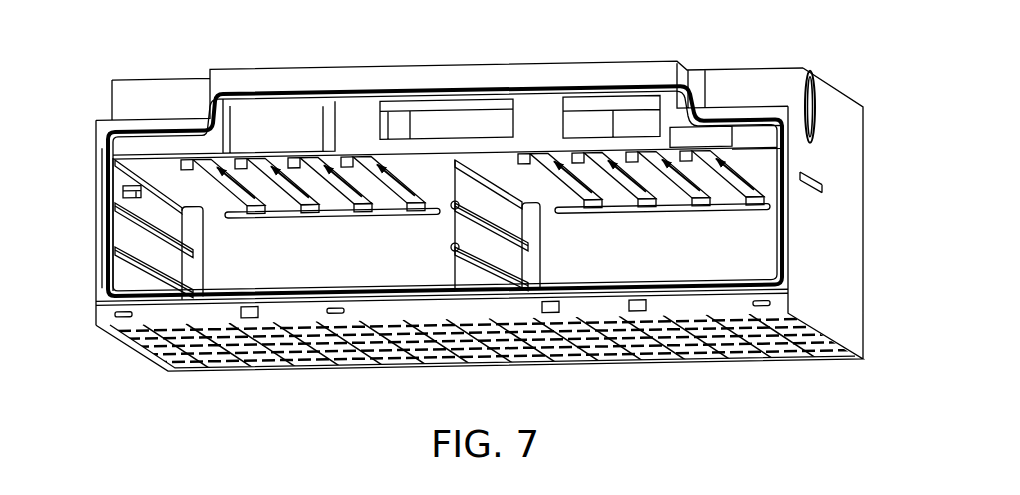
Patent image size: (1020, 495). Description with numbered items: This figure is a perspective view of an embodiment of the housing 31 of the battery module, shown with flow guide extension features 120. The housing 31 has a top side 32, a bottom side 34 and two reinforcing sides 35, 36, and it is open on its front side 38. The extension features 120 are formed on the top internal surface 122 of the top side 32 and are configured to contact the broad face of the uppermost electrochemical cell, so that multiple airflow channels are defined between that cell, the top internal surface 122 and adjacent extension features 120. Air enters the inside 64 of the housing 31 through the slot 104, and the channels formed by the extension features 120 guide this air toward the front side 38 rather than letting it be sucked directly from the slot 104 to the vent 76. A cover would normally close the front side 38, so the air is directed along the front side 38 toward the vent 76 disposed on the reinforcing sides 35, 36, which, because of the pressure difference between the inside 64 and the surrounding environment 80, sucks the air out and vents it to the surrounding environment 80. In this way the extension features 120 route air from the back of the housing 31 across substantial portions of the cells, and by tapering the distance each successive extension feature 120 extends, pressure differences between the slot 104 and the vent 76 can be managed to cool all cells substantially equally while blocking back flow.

The housing 31 is at (80, 113).
The top side 32 is at (148, 150).
The top internal surface 122 is at (157, 175).
The vent 76 is at (125, 192).
The reinforcing side 36 is at (97, 210).
The surrounding environment 80 is at (73, 243).
The front side 38 is at (122, 287).
The bottom side 34 is at (245, 366).
The flow guide extension features 120 is at (400, 222).
The inside 64 is at (302, 278).
The slot 104 is at (431, 226).
The reinforcing side 35 is at (838, 258).